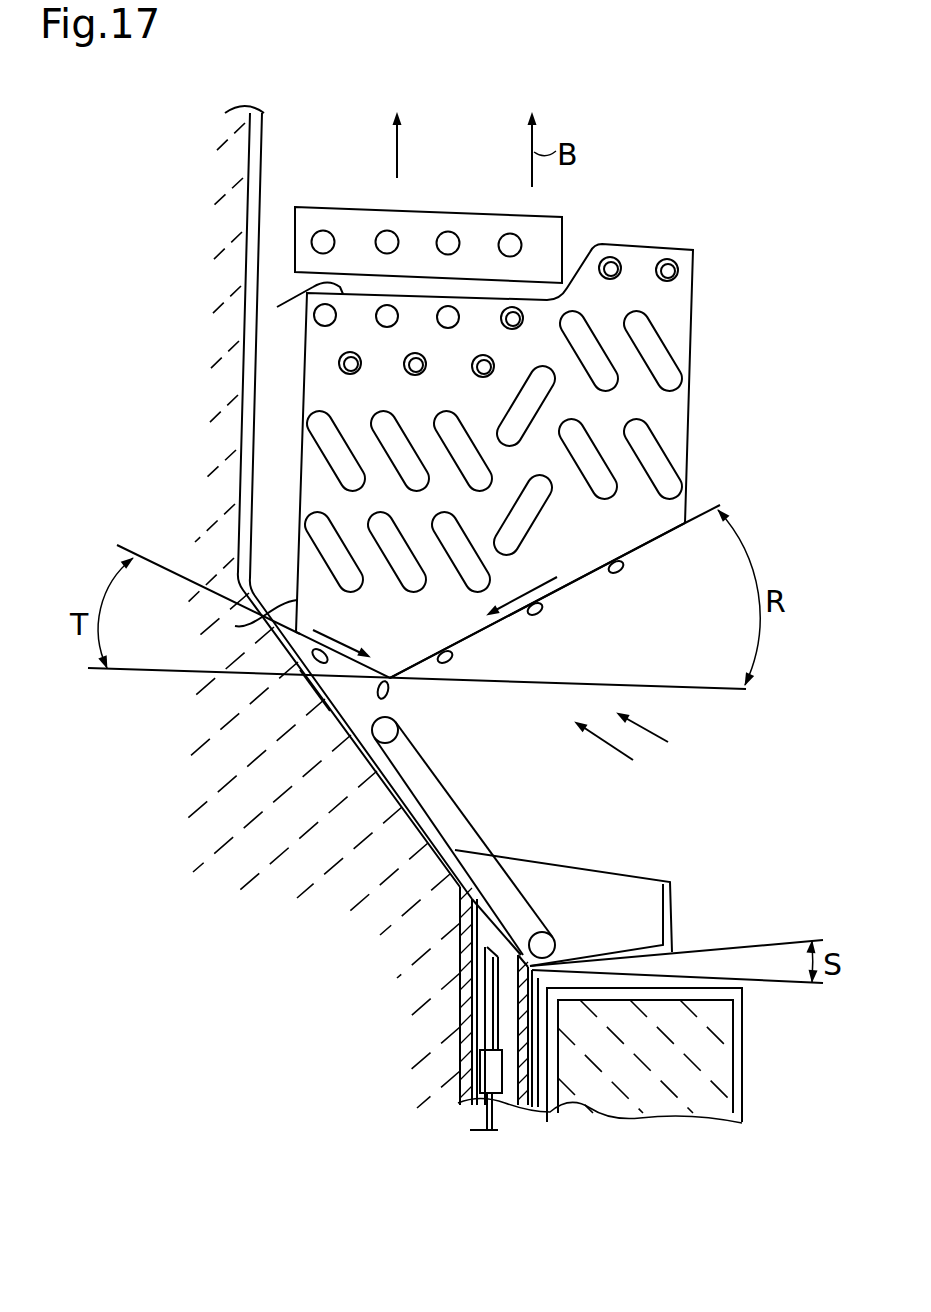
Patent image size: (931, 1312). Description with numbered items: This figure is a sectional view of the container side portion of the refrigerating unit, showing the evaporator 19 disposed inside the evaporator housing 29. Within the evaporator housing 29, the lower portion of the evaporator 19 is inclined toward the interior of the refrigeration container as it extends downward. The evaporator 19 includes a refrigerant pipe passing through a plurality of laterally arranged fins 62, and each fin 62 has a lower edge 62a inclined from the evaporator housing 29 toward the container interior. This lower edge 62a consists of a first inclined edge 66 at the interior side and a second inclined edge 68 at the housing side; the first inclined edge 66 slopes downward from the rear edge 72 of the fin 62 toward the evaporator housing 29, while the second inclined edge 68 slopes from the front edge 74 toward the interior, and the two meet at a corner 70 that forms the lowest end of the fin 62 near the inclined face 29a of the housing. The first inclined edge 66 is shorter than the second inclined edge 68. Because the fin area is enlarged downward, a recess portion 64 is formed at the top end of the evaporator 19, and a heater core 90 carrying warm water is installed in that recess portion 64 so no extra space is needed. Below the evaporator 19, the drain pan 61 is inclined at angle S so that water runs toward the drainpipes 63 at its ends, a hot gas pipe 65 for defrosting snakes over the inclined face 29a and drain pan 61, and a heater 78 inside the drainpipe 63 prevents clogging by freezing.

The evaporator 19 is at (670, 418).
The heater core 90 is at (310, 214).
The recess portion 64 is at (277, 307).
The fin 62 is at (633, 531).
The lower edge 62a is at (557, 593).
The first inclined edge 66 is at (475, 634).
The corner 70 is at (392, 680).
The rear edge 72 is at (693, 522).
The front edge 74 is at (235, 626).
The evaporator housing 29 is at (235, 703).
The inclined face 29a is at (388, 778).
The second inclined edge 68 is at (313, 690).
The hot gas pipe 65 is at (440, 812).
The drain pan 61 is at (673, 917).
The heater 78 is at (480, 1080).
The drainpipe 63 is at (535, 1085).